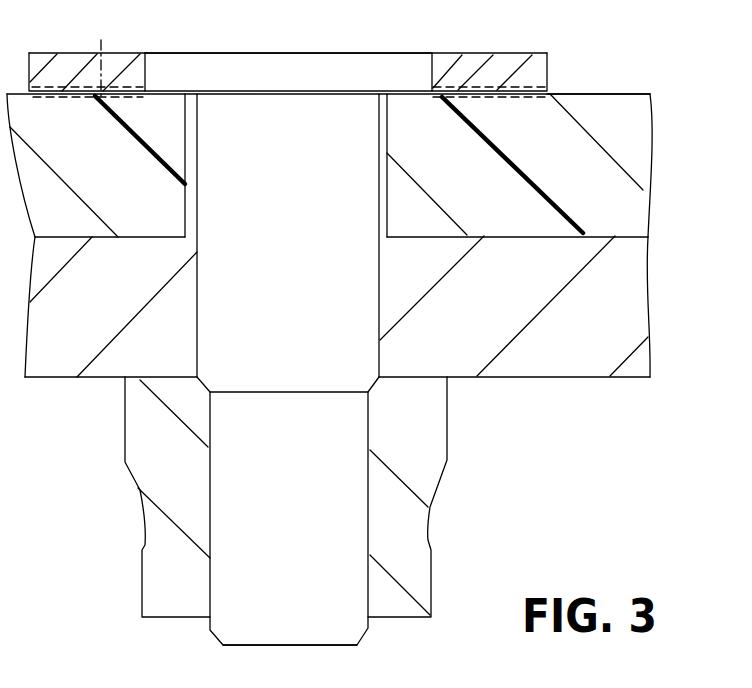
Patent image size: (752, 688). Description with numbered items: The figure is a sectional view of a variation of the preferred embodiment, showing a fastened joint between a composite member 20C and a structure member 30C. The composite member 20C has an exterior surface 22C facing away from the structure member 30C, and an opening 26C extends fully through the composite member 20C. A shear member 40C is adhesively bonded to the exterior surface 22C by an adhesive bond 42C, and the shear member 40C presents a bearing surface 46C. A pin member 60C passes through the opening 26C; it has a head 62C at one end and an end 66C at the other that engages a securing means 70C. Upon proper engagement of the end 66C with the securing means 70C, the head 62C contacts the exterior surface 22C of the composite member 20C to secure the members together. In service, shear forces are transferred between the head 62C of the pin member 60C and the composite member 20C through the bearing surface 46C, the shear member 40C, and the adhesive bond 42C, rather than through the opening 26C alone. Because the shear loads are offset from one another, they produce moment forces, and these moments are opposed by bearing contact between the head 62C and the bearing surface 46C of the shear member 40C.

The composite member 20C is at (650, 175).
The exterior surface 22C is at (606, 94).
The opening 26C is at (375, 134).
The structure member 30C is at (650, 325).
The shear member 40C is at (500, 53).
The adhesive bond 42C is at (101, 40).
The bearing surface 46C is at (146, 81).
The pin member 60C is at (375, 53).
The head 62C is at (288, 30).
The end 66C is at (358, 646).
The securing means 70C is at (431, 567).